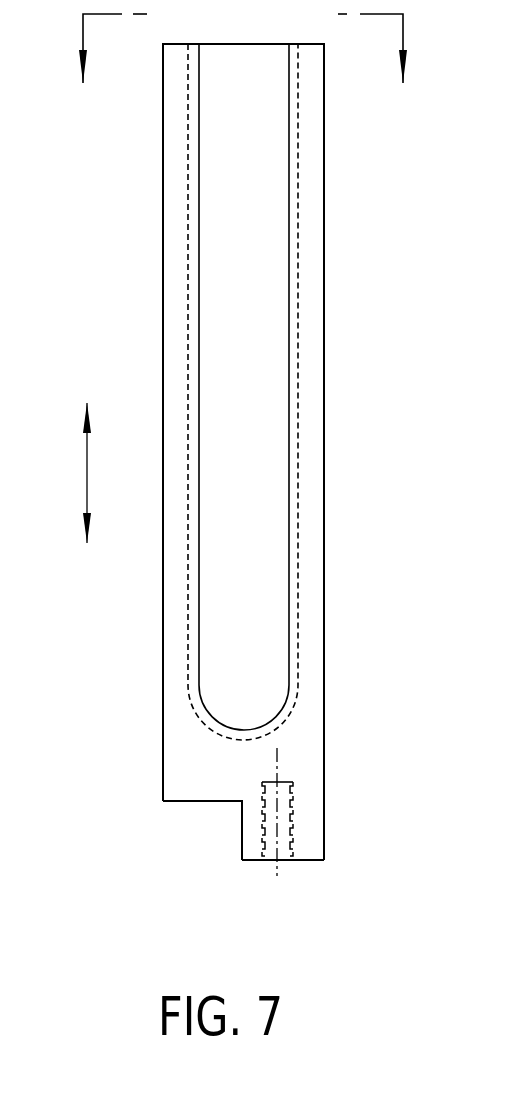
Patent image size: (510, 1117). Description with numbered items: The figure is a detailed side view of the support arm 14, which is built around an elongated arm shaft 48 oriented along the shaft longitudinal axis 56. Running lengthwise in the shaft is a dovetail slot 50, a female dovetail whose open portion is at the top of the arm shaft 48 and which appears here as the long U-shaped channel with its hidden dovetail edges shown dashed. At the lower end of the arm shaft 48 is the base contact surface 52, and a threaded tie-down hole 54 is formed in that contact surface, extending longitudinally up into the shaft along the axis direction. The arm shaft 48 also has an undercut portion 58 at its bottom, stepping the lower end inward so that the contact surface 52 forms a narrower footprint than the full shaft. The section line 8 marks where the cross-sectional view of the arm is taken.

The section line 8- 8 is at (245, 48).
The support arm 14 is at (424, 425).
The arm shaft 48 is at (293, 751).
The dovetail slot 50 is at (255, 320).
The base contact surface 52 is at (310, 868).
The threaded tie-down hole 54 is at (273, 868).
The shaft longitudinal axis 56 is at (68, 473).
The undercut portion 58 is at (207, 803).